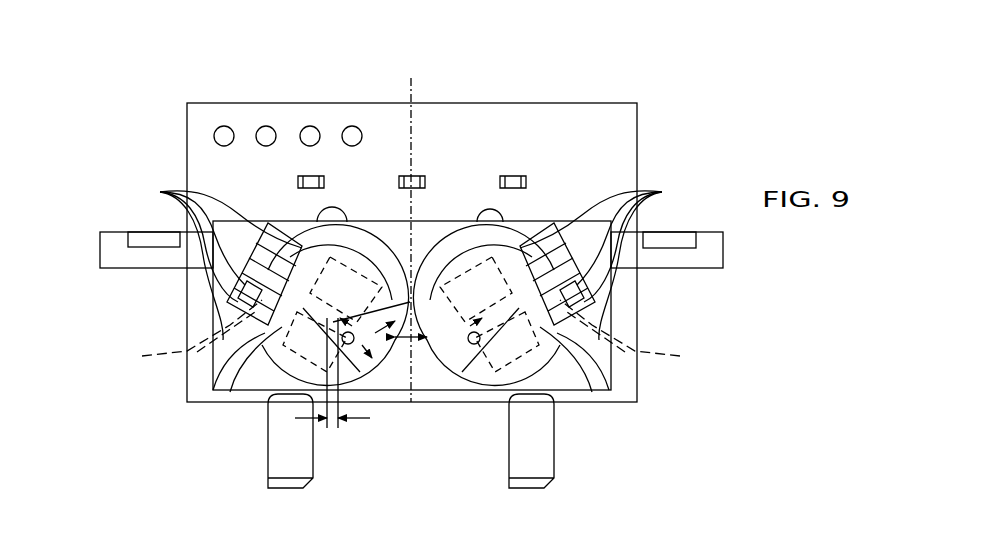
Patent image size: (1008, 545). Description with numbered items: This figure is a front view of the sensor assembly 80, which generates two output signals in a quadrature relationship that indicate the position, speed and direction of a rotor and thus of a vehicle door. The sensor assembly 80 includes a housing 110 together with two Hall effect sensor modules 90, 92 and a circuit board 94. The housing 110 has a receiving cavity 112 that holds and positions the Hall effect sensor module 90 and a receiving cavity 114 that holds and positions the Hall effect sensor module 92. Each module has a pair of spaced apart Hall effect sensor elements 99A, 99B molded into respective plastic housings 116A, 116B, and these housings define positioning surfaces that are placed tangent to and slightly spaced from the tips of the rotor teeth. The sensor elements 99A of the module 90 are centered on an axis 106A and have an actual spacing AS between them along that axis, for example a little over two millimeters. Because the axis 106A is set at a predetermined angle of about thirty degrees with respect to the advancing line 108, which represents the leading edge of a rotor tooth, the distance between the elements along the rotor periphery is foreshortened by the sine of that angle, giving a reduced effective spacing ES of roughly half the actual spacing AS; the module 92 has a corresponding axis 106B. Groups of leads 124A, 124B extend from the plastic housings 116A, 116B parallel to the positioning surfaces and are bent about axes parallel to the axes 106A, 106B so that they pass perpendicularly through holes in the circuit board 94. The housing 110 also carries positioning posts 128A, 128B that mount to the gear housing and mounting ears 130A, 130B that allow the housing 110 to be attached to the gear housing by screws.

The sensor assembly 80 is at (567, 88).
The Hall effect sensor module 90 is at (460, 250).
The Hall effect sensor module 92 is at (380, 243).
The circuit board 94 is at (640, 113).
The Hall effect sensor elements 99A is at (642, 334).
The Hall effect sensor elements 99B is at (181, 334).
The axis 106A is at (579, 378).
The axis 106B is at (243, 378).
The advancing line 108 is at (411, 89).
The housing 110 is at (557, 250).
The receiving cavity 112 is at (477, 247).
The receiving cavity 114 is at (353, 240).
The plastic housing 116A is at (601, 340).
The plastic housing 116B is at (223, 340).
The group of leads 124A is at (626, 259).
The group of leads 124B is at (200, 259).
The positioning post 128A is at (554, 458).
The positioning post 128B is at (268, 460).
The mounting ear 130A is at (679, 268).
The mounting ear 130B is at (147, 268).
The effective spacing ES is at (347, 374).
The actual spacing AS is at (397, 373).